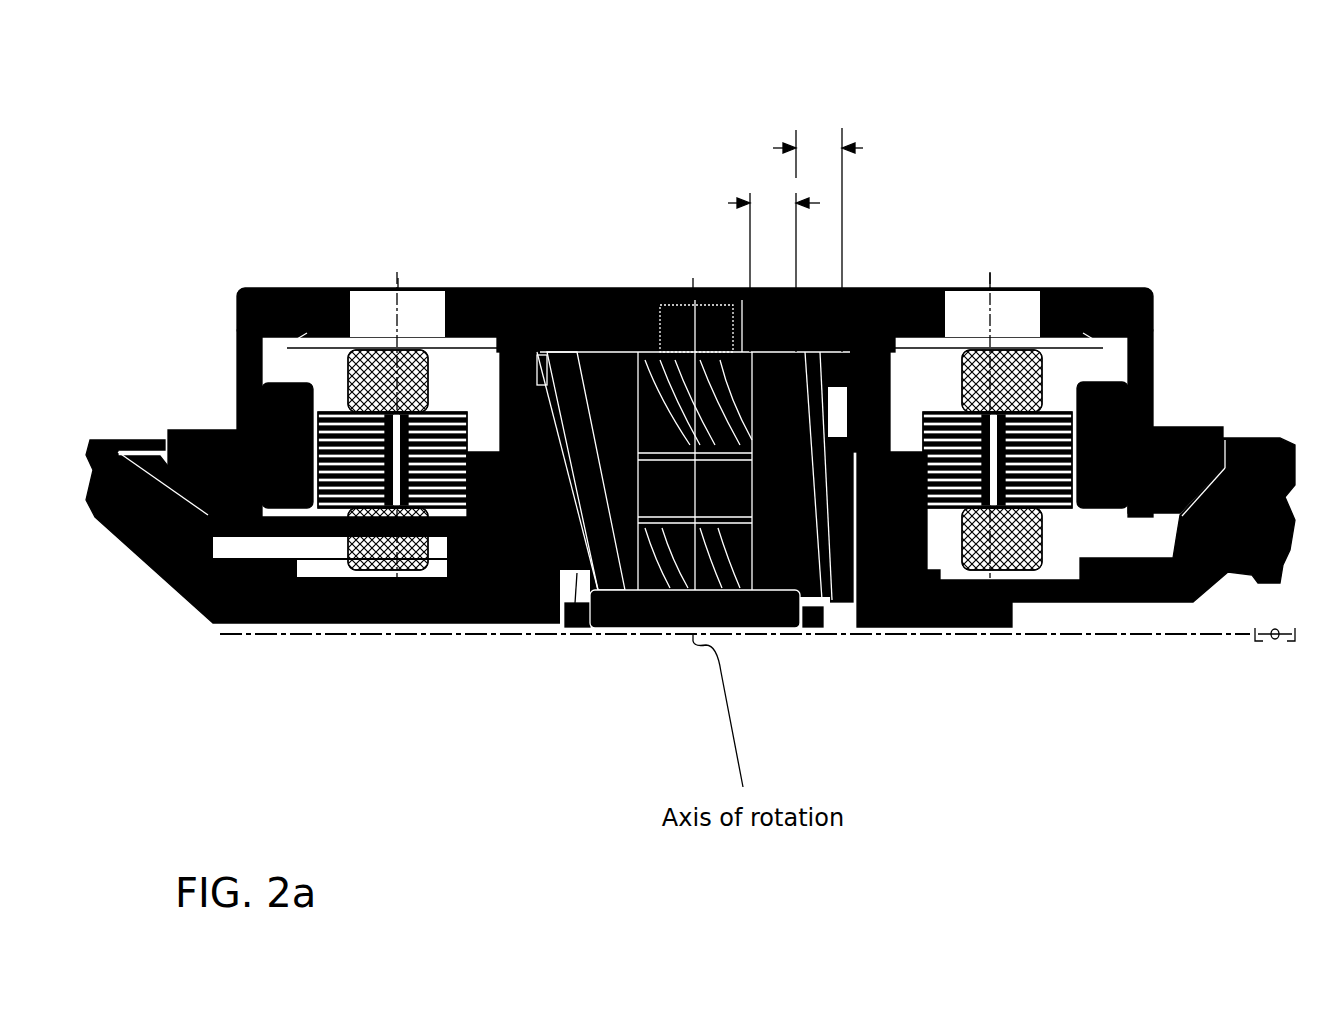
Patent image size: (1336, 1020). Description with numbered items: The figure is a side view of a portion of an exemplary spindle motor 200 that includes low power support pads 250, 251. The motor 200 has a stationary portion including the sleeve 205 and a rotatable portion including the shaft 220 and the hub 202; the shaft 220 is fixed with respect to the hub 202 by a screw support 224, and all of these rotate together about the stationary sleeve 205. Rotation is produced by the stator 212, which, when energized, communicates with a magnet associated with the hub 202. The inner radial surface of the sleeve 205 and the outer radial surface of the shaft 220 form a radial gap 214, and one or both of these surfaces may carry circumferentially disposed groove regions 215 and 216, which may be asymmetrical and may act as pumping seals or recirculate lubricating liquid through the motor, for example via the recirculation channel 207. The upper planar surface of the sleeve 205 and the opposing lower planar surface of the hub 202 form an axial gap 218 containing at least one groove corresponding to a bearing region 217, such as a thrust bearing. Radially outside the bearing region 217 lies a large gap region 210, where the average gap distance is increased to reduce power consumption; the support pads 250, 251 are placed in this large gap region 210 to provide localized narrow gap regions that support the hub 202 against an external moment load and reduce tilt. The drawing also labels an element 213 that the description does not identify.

The spindle motor 200 is at (308, 121).
The hub 202 is at (920, 308).
The sleeve 205 is at (575, 575).
The recirculation channel 207 is at (535, 372).
The large gap region 210 is at (856, 148).
The stator 212 is at (1028, 490).
The stator support 213 is at (1102, 503).
The radial gap 214 is at (765, 500).
The groove region 215 is at (655, 485).
The groove region 216 is at (676, 586).
The bearing region 217 is at (736, 203).
The axial gap 218 is at (606, 337).
The shaft 220 is at (738, 626).
The screw support 224 is at (686, 315).
The support pad 250 is at (557, 350).
The support pad 251 is at (813, 350).